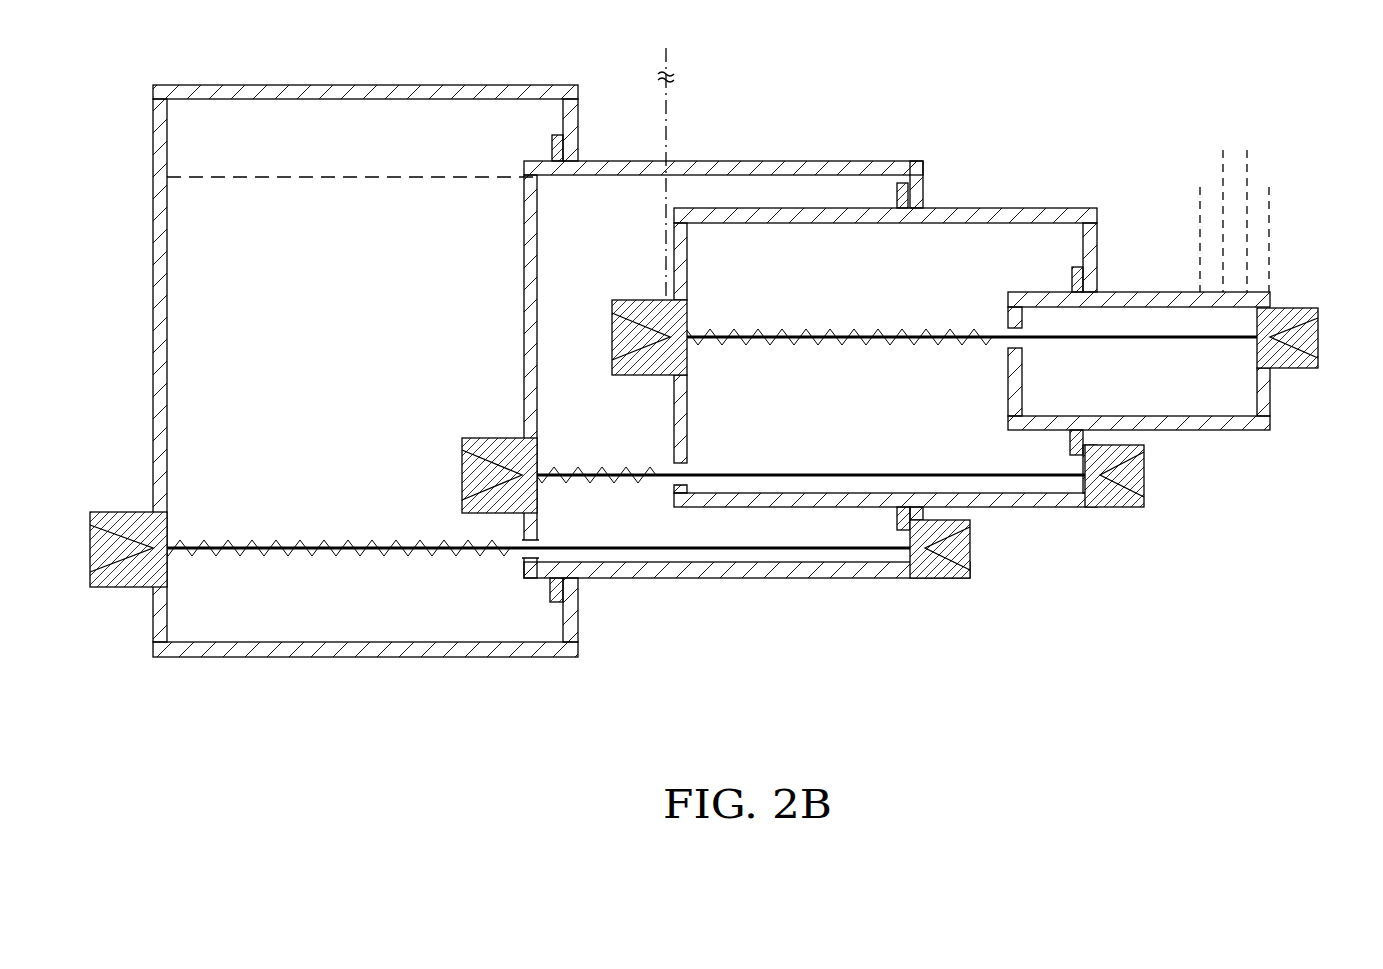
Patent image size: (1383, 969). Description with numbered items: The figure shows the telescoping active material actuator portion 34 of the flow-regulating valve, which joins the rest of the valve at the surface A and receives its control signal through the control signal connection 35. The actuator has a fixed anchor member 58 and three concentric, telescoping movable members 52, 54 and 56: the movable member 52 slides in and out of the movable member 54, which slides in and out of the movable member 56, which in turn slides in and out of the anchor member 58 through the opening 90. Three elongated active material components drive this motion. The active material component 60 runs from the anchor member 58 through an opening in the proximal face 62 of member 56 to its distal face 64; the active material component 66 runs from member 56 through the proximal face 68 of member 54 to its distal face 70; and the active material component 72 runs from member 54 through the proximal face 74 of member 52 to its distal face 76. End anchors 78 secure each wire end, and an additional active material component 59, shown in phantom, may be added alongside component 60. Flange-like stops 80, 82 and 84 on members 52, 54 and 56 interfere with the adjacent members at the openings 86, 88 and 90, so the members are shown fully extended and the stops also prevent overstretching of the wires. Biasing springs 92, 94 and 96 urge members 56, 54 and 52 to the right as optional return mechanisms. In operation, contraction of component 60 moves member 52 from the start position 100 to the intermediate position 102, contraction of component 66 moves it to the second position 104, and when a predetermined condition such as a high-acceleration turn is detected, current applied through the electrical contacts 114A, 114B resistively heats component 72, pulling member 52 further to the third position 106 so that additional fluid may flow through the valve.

The telescoping active material actuator portion 34 is at (900, 100).
The control signal connection 35 is at (670, 120).
The movable member 52 is at (1098, 343).
The movable member 54 is at (1060, 508).
The movable member 56 is at (746, 405).
The fixed anchor member 58 is at (363, 85).
The additional active material component 59 is at (345, 177).
The active material component 60 is at (640, 548).
The proximal face 62 is at (550, 592).
The distal face 64 is at (900, 575).
The active material component 66 is at (810, 474).
The proximal face 68 is at (851, 393).
The distal face 70 is at (1070, 455).
The active material component 72 is at (1175, 345).
The proximal face 74 is at (1005, 410).
The distal face 76 is at (1257, 385).
The end anchors 78 is at (699, 447).
The stop 80 is at (1072, 280).
The stop 82 is at (898, 195).
The stop 84 is at (552, 150).
The opening 86 is at (1090, 300).
The opening 88 is at (905, 223).
The opening 90 is at (578, 178).
The biasing spring 92 is at (385, 552).
The biasing spring 94 is at (620, 473).
The biasing spring 96 is at (915, 345).
The start position 100 is at (1269, 215).
The intermediate position 102 is at (1247, 150).
The intermediate position 104 is at (1223, 150).
The intermediate position 106 is at (1200, 215).
The electrical contact 114A is at (680, 340).
The electrical contact 114B is at (1275, 362).
The surface A is at (1318, 308).